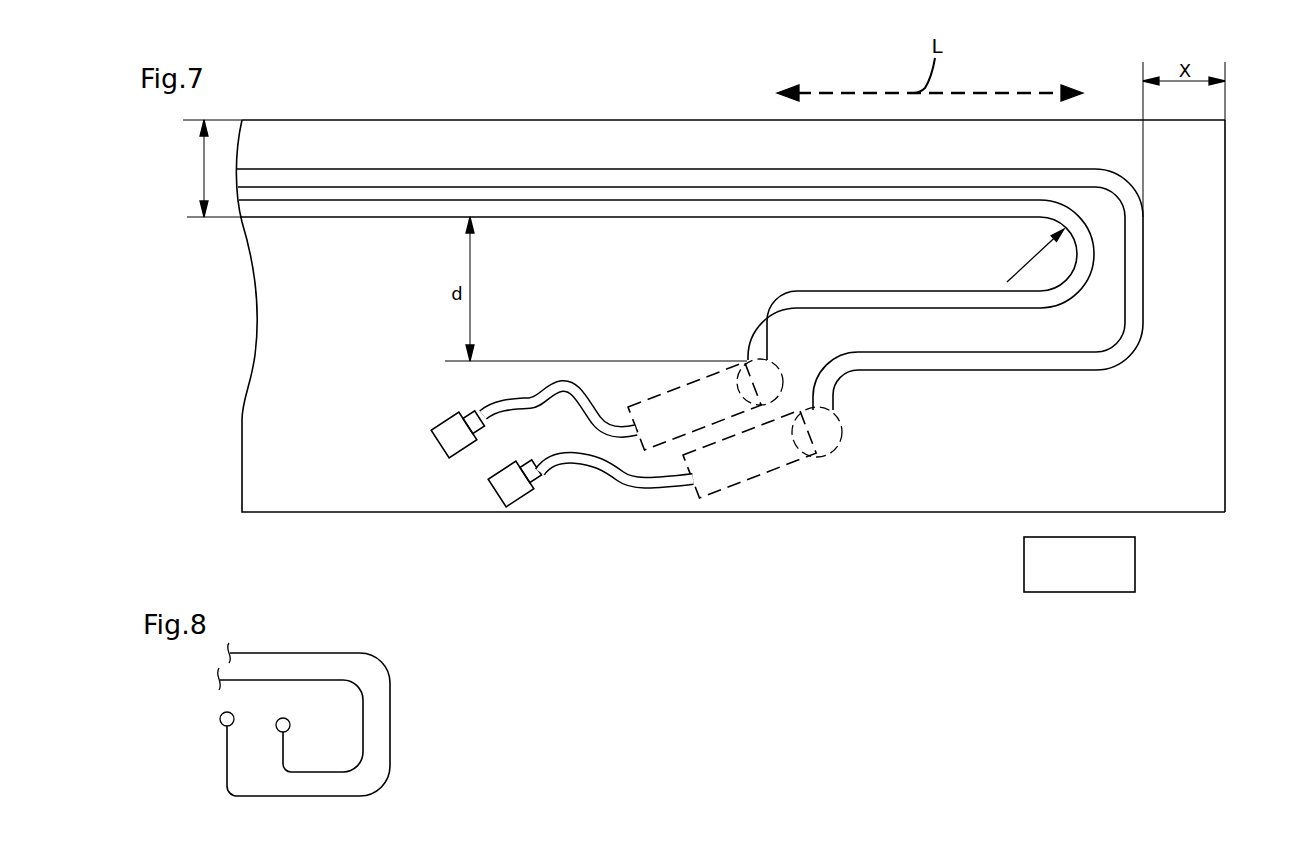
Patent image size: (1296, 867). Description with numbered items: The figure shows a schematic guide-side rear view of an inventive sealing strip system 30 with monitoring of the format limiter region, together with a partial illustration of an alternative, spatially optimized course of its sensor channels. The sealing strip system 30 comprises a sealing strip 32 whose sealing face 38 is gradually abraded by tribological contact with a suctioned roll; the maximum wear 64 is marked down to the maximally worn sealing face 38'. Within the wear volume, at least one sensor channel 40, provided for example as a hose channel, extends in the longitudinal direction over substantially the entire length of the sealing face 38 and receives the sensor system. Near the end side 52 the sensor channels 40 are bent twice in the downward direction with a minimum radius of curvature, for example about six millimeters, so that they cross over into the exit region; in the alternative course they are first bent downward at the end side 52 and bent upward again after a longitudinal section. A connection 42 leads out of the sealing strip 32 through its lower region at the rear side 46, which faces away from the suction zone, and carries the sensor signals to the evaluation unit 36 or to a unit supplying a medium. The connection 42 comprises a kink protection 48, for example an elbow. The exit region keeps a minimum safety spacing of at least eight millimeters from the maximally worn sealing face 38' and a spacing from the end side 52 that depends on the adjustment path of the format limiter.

In FIG. 7, the sealing strip system 30 is at (717, 64).
In FIG. 8, the sealing strip system 30 is at (370, 624).
In FIG. 7, the sealing strip 32 is at (280, 352).
In FIG. 8, the sealing strip 32 is at (335, 719).
In FIG. 7, the evaluation unit 36 is at (1070, 578).
In FIG. 7, the sealing face 38 is at (733, 91).
In FIG. 7, the maximally worn sealing face 38' is at (658, 284).
In FIG. 7, the sensor channel 40 is at (410, 210).
In FIG. 8, the sensor channel 40 is at (362, 710).
In FIG. 7, the connection 42 is at (713, 412).
In FIG. 8, the connection 42 is at (234, 717).
In FIG. 7, the rear side 46 is at (1000, 453).
In FIG. 7, the kink protection 48 is at (798, 462).
In FIG. 7, the end side 52 is at (1225, 262).
In FIG. 7, the maximum wear 64 is at (208, 168).